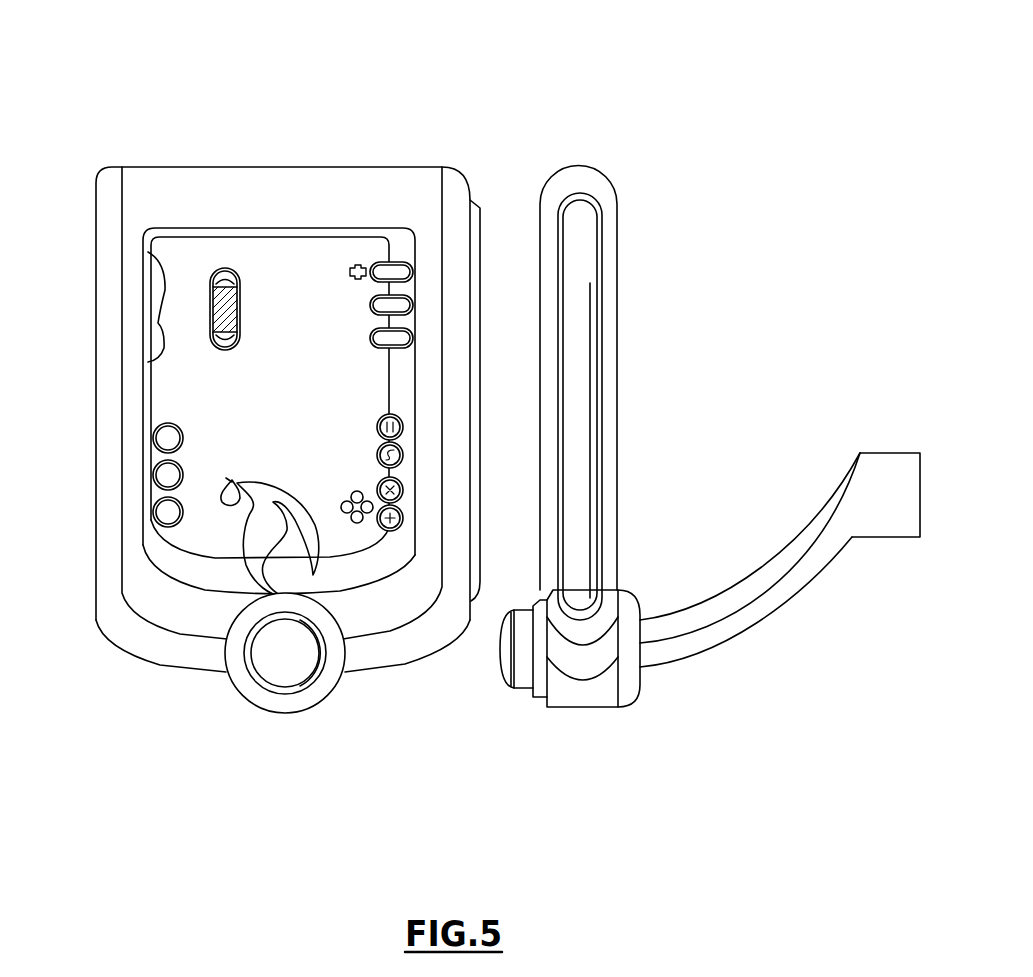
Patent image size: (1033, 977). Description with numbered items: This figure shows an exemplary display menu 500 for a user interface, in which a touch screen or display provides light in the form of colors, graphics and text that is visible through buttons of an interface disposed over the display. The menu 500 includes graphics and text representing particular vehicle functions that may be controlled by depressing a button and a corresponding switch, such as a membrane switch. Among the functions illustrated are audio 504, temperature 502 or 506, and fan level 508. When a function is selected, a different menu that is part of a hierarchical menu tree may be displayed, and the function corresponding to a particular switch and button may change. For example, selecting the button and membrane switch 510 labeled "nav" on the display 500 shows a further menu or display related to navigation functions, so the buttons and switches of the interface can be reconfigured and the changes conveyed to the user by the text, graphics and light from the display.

The display menu 500 is at (277, 167).
The temperature 502 is at (163, 443).
The audio 504 is at (202, 558).
The temperature 506 is at (313, 705).
The fan level 508 is at (400, 507).
The button and membrane switch 510 is at (418, 300).